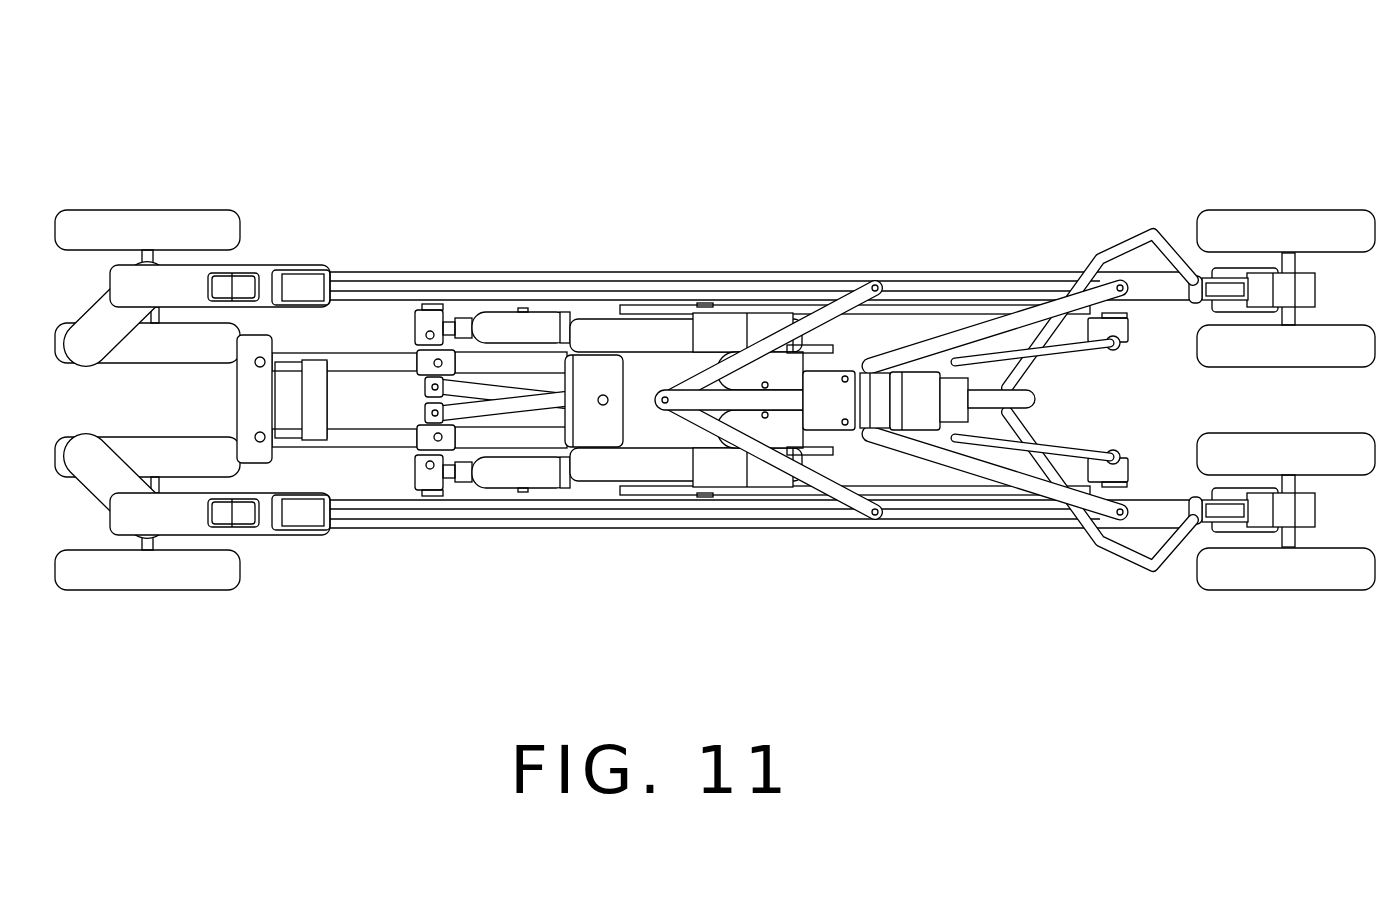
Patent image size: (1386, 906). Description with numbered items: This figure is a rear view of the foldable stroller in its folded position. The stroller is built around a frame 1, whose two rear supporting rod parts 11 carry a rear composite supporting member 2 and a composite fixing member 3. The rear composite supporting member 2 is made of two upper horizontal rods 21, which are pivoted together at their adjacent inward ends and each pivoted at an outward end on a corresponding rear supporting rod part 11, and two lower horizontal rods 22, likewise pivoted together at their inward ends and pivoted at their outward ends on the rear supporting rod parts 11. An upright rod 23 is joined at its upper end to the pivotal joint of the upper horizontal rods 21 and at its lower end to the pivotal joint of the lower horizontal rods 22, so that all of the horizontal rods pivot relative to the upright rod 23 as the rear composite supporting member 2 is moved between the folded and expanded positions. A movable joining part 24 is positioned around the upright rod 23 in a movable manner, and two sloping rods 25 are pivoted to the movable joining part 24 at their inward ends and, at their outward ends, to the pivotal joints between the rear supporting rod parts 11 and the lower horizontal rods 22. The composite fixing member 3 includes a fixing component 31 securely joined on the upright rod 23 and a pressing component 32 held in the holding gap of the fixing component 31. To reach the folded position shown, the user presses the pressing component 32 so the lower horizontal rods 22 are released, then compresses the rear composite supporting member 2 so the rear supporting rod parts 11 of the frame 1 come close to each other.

The frame 1 is at (345, 178).
The rear supporting rod part 11 is at (812, 290).
The rear composite supporting member 2 is at (657, 372).
The upper horizontal rod 21 is at (705, 378).
The lower horizontal rod 22 is at (993, 357).
The upright rod 23 is at (745, 403).
The movable joining part 24 is at (827, 383).
The sloping rod 25 is at (965, 333).
The composite fixing member 3 is at (1045, 412).
The fixing component 31 is at (868, 413).
The pressing component 32 is at (922, 403).